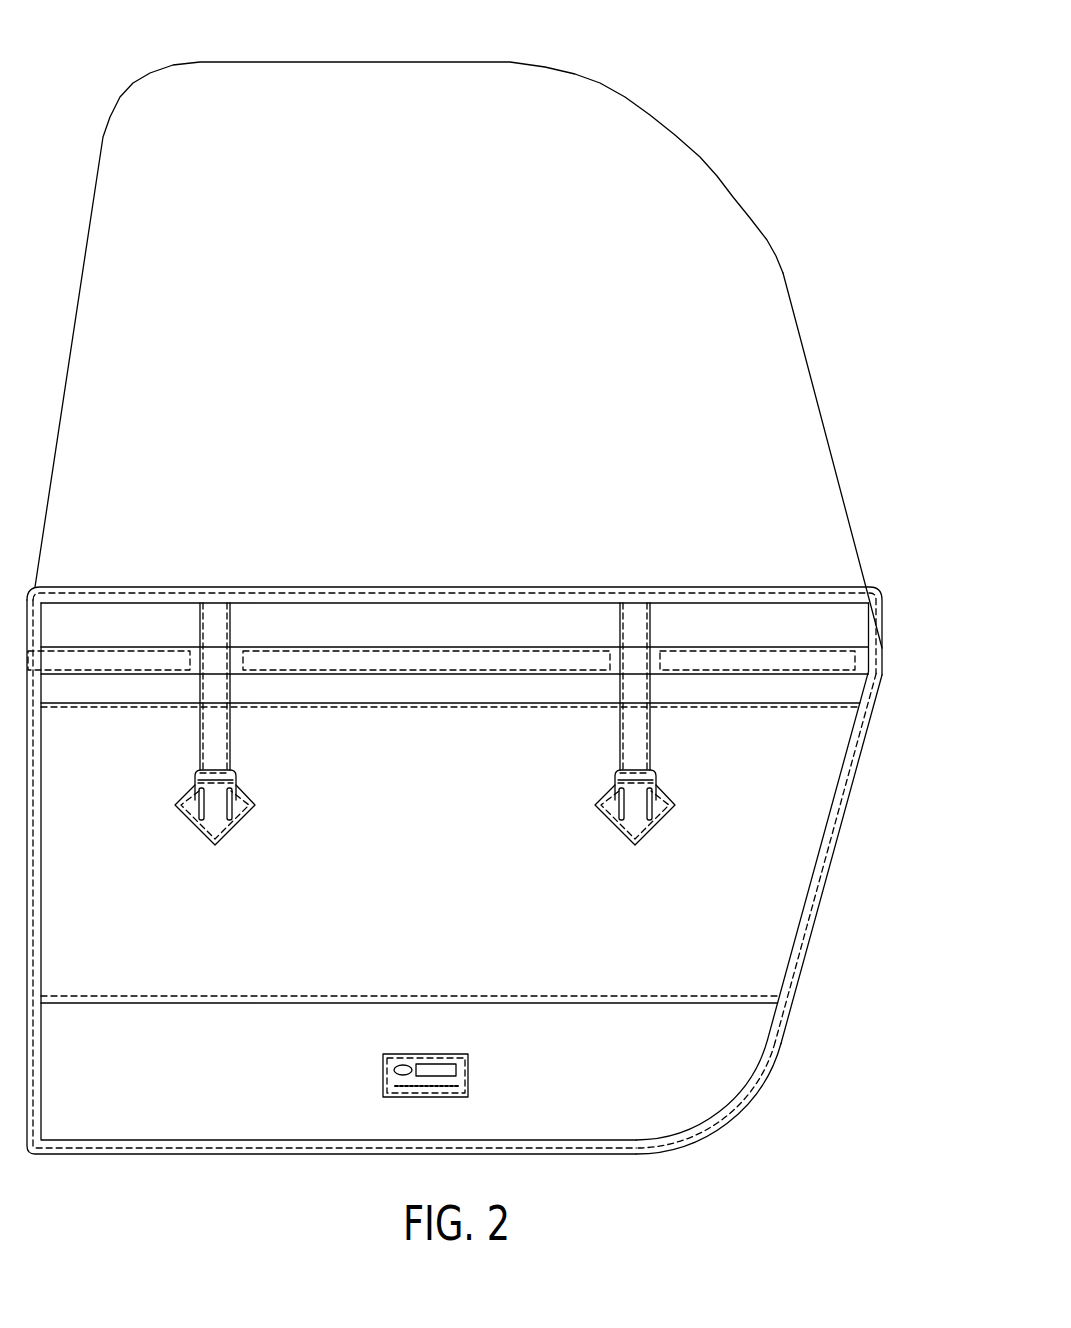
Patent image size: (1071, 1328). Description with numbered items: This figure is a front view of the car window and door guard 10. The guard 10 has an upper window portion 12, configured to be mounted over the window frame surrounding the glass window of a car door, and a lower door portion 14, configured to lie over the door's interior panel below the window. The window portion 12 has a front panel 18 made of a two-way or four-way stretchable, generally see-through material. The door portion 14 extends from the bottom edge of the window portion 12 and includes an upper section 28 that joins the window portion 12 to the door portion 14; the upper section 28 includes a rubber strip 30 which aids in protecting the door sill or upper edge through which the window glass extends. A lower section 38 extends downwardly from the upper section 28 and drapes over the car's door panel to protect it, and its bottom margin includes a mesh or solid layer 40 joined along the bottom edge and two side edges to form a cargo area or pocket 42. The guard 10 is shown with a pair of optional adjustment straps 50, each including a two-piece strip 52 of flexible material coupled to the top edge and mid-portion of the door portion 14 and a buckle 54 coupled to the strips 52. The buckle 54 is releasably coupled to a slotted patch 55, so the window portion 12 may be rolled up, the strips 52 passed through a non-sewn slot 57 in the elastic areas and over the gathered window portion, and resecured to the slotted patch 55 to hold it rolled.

The car window and door guard 10 is at (814, 89).
The window portion 12 is at (775, 317).
The door portion 14 is at (785, 828).
The front panel 18 is at (775, 468).
The upper section 28 is at (840, 612).
The rubber strip 30 is at (835, 683).
The lower section 38 is at (767, 905).
The mesh or solid layer 40 is at (737, 1055).
The cargo area or pocket 42 is at (737, 1003).
The adjustment strap 50 is at (262, 765).
The two-piece strip 52 is at (220, 713).
The buckle 54 is at (195, 777).
The slotted patch 55 is at (650, 830).
The slot 57 is at (669, 654).